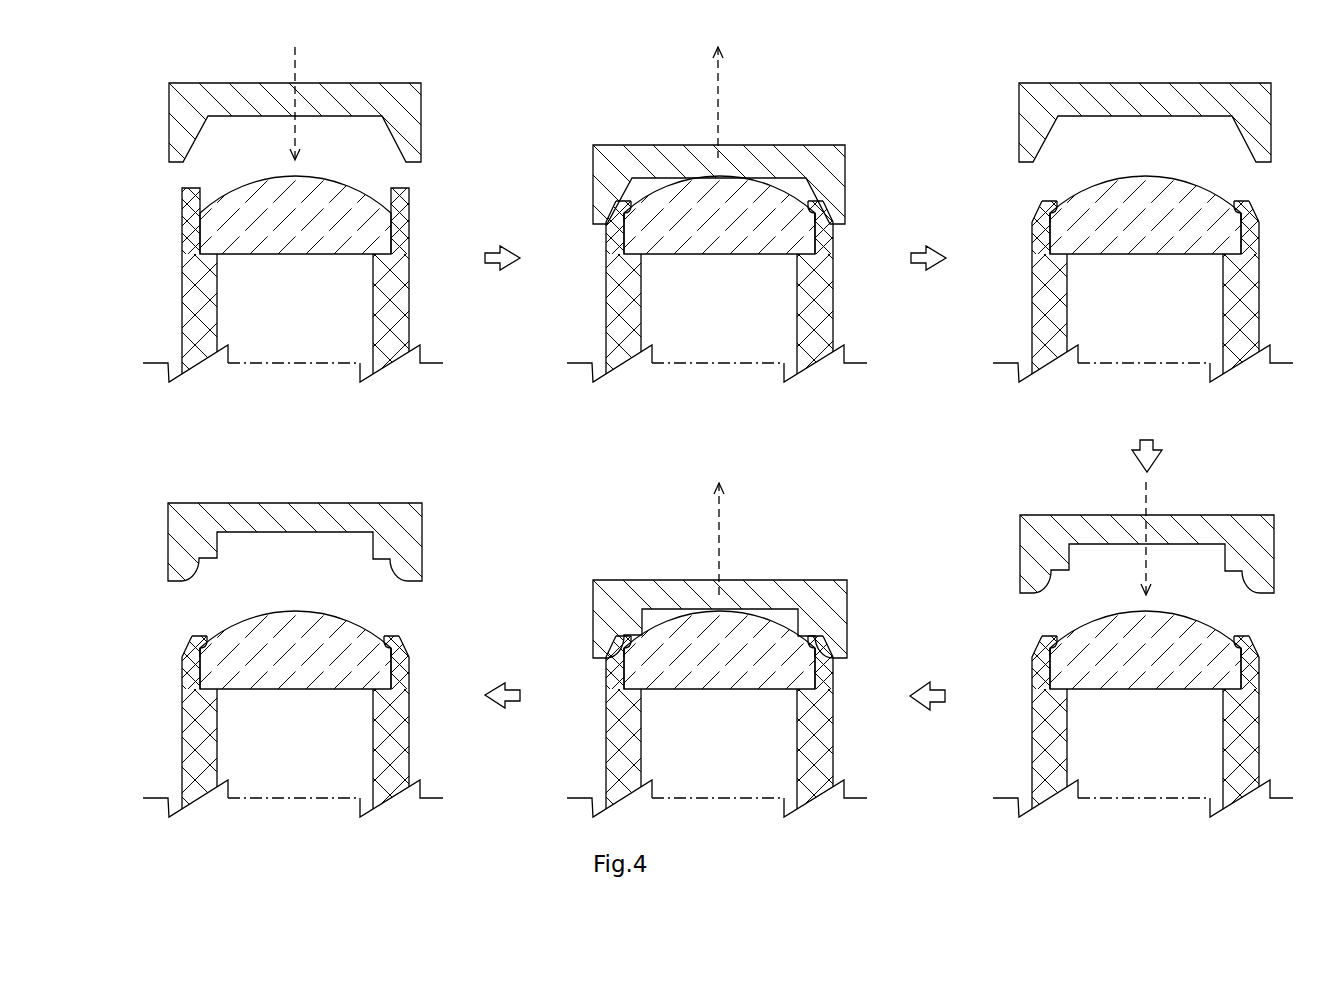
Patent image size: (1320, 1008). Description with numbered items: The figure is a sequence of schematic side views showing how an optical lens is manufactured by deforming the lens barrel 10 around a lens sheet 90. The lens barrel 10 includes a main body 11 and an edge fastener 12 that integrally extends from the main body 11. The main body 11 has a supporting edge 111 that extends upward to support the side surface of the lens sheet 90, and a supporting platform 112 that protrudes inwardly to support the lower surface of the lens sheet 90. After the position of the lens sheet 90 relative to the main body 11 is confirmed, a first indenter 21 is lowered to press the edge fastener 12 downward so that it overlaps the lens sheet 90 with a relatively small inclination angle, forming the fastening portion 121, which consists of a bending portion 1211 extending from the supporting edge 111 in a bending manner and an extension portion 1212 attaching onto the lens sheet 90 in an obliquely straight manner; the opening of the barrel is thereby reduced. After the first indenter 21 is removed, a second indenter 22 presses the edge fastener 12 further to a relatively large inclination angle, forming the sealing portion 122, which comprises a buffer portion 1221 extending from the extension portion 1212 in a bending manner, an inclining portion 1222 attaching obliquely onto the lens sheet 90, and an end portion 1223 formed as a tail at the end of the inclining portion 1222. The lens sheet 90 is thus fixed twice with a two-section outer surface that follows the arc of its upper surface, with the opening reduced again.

The lens barrel 10 is at (160, 362).
The main body 11 is at (684, 498).
The supporting edge 111 is at (183, 238).
The supporting platform 112 is at (198, 290).
The edge fastener 12 is at (683, 379).
The fastening portion 121 is at (683, 386).
The bending portion 1211 is at (603, 211).
The extension portion 1212 is at (599, 165).
The sealing portion 122 is at (678, 429).
The buffer portion 1221 is at (188, 640).
The inclining portion 1222 is at (194, 640).
The end portion 1223 is at (217, 630).
The first indenter 21 is at (270, 93).
The second indenter 22 is at (313, 500).
The lens sheet 90 is at (303, 247).